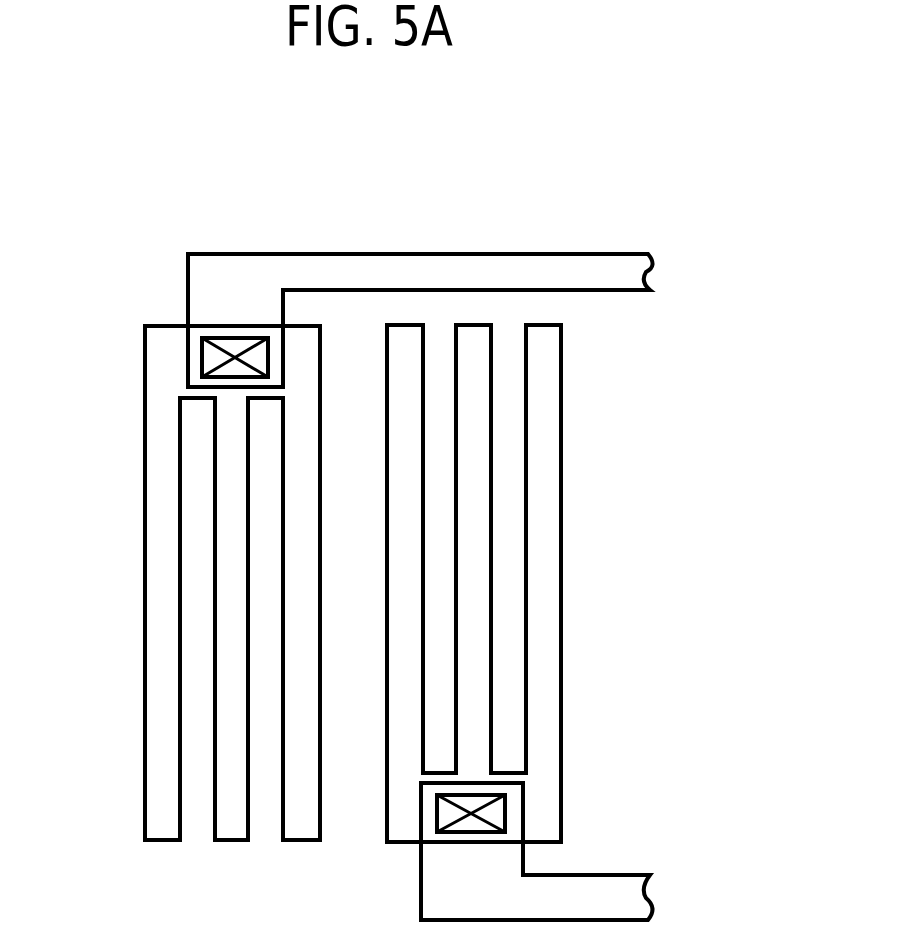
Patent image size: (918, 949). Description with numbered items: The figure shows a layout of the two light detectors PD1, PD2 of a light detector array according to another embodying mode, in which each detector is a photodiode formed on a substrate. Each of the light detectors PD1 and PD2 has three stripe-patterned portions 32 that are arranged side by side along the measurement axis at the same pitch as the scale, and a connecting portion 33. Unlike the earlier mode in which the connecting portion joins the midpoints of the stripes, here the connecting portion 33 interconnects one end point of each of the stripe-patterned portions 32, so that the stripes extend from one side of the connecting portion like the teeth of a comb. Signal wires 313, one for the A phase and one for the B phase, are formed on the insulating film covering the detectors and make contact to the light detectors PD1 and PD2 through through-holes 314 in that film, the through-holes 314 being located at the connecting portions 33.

The signal wire 313 is at (447, 270).
The through-hole 314 is at (224, 345).
The connecting portion 33 is at (160, 366).
The stripe-patterned portion 32 is at (298, 713).
The light detector PD1 is at (135, 570).
The light detector PD2 is at (578, 593).